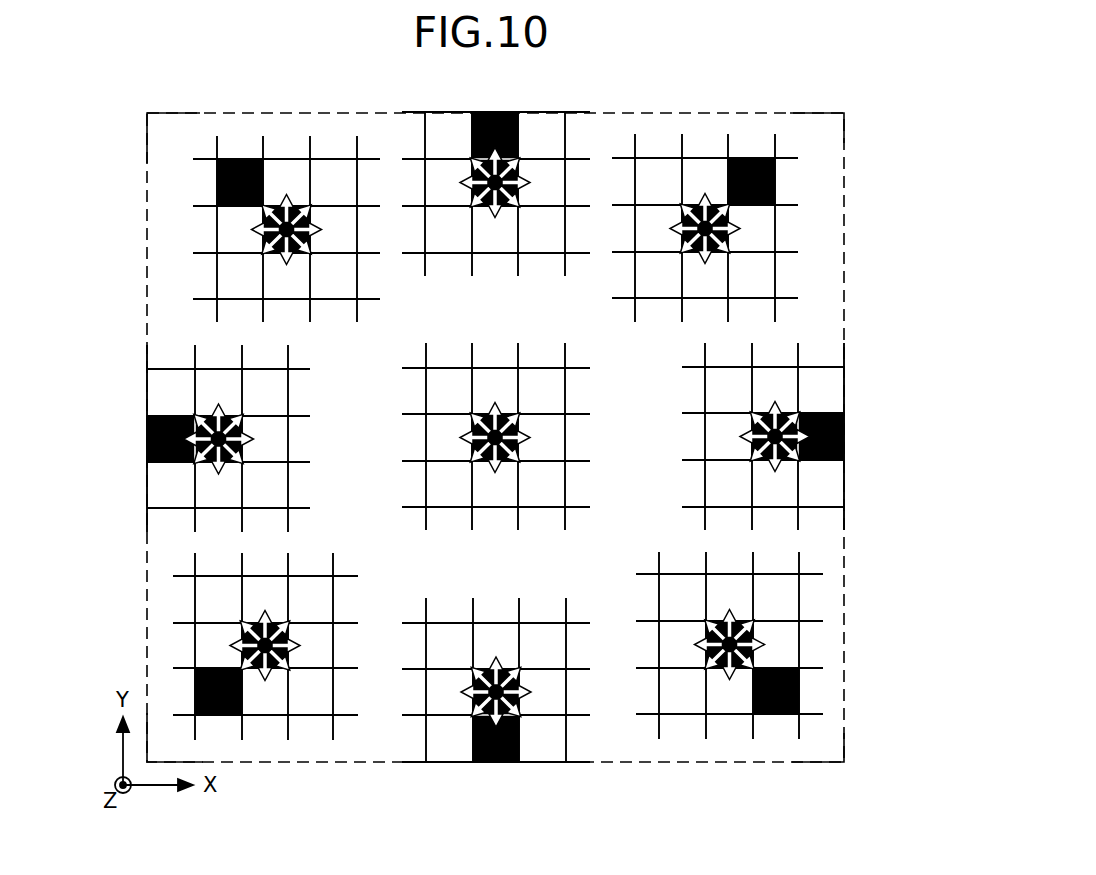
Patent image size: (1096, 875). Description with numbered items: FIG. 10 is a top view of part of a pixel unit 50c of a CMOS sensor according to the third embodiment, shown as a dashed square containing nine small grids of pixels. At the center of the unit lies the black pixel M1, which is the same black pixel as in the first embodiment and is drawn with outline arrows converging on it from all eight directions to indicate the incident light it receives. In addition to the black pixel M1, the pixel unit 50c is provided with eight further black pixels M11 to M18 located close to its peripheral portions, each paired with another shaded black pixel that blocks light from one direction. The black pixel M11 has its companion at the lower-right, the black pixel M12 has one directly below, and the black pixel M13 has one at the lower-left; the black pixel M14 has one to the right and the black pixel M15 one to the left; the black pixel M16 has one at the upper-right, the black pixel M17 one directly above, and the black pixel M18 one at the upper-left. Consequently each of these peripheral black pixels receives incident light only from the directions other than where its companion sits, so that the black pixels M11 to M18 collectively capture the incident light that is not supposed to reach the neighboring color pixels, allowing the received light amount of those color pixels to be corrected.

The pixel unit 50c is at (825, 95).
The black pixel M1 is at (508, 414).
The black pixel M11 is at (757, 628).
The black pixel M12 is at (518, 680).
The black pixel M13 is at (243, 633).
The black pixel M14 is at (792, 413).
The black pixel M15 is at (207, 416).
The black pixel M16 is at (721, 205).
The black pixel M17 is at (518, 172).
The black pixel M18 is at (301, 205).